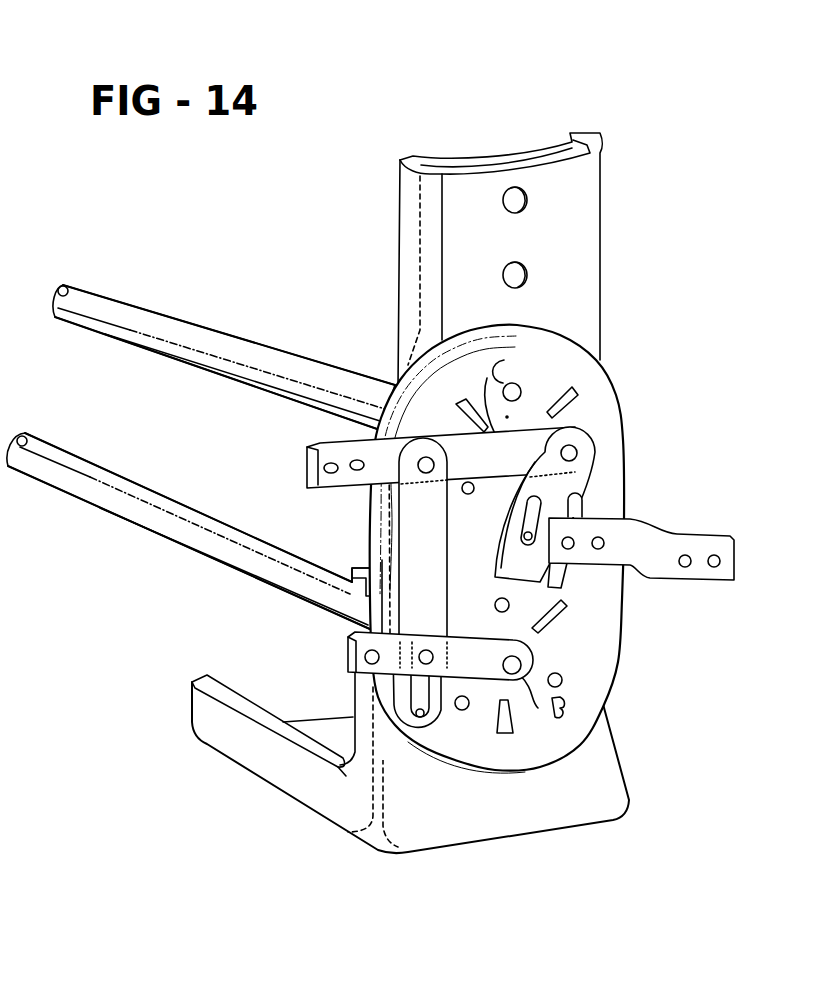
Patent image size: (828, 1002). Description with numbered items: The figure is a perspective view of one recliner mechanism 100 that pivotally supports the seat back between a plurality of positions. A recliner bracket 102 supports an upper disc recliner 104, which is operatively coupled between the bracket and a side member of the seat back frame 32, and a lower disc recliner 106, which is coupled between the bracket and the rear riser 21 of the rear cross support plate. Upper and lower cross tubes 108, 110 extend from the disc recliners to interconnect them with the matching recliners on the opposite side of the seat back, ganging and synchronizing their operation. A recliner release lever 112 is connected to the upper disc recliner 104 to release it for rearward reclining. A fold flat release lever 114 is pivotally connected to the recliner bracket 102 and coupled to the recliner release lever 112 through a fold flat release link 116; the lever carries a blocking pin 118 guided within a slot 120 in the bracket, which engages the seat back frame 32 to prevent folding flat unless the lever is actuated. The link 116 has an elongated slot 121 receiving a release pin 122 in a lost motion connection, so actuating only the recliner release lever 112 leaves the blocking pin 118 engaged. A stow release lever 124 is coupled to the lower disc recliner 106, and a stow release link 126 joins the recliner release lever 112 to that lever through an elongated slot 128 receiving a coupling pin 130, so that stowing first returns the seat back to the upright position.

The recliner mechanism 100 is at (649, 185).
The rear riser 21 is at (417, 834).
The seat back frame 32 is at (410, 293).
The recliner bracket 102 is at (597, 690).
The upper disc recliner 104 is at (575, 367).
The lower disc recliner 106 is at (520, 744).
The upper cross tube 108 is at (186, 333).
The lower cross tube 110 is at (100, 490).
The recliner release lever 112 is at (306, 470).
The fold flat release lever 114 is at (736, 571).
The fold flat release link 116 is at (497, 548).
The blocking pin 118 is at (573, 549).
The slot 120 is at (551, 514).
The elongated slot 121 is at (522, 523).
The release pin 122 is at (583, 512).
The stow release lever 124 is at (347, 650).
The stow release link 126 is at (422, 548).
The elongated slot 128 is at (443, 760).
The coupling pin 130 is at (426, 660).